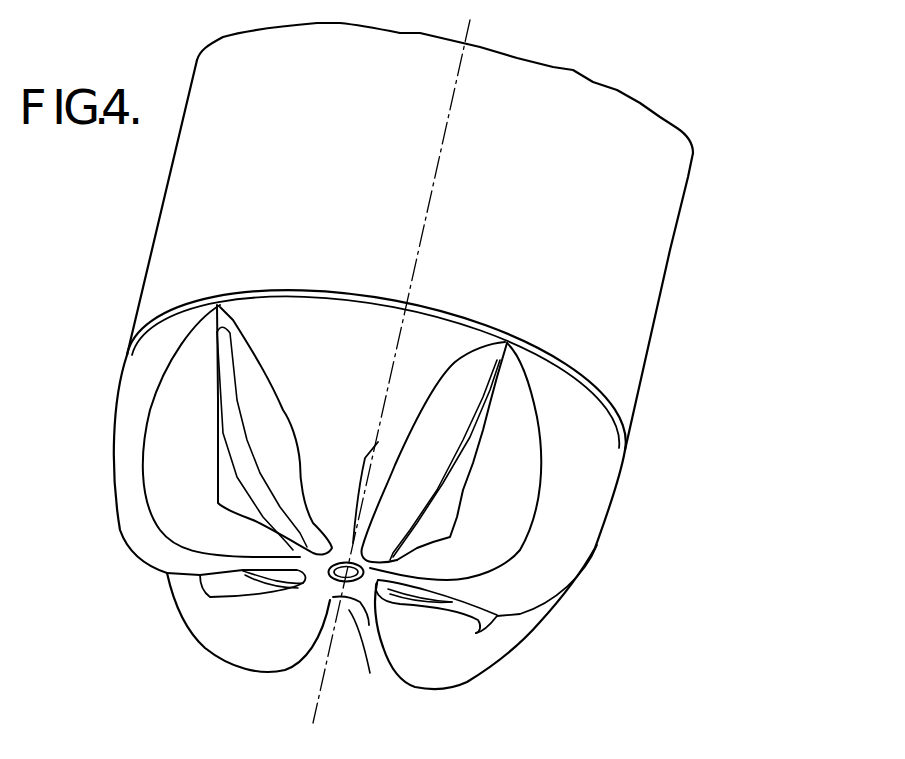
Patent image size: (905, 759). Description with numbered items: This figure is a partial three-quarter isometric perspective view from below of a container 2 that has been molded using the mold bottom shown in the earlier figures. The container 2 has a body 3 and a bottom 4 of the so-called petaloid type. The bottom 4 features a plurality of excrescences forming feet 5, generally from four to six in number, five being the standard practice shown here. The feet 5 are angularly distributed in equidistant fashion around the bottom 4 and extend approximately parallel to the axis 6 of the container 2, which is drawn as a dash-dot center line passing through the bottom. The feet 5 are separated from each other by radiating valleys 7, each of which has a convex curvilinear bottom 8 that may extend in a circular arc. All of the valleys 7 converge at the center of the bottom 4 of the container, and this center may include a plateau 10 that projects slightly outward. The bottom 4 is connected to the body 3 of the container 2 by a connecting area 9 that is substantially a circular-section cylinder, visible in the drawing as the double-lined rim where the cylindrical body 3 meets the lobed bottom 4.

The container 2 is at (148, 256).
The body 3 is at (611, 246).
The bottom 4 is at (553, 541).
The feet 5 is at (267, 638).
The axis 6 is at (472, 30).
The radiating valleys 7 is at (182, 450).
The convex curvilinear bottom 8 is at (230, 432).
The connecting area 9 is at (612, 422).
The plateau 10 is at (337, 578).